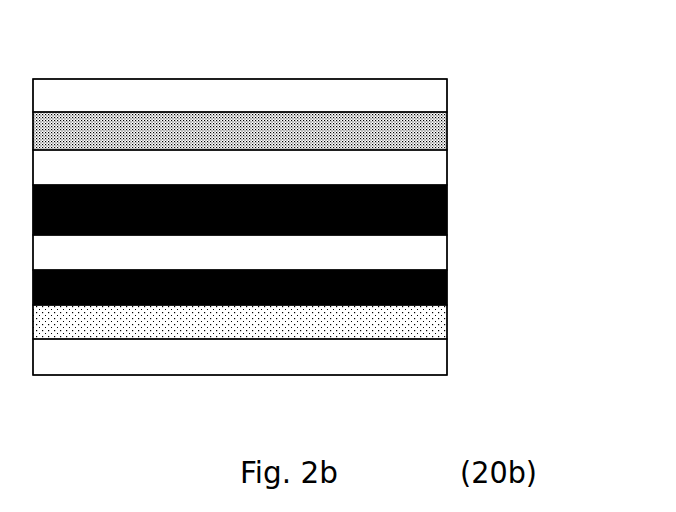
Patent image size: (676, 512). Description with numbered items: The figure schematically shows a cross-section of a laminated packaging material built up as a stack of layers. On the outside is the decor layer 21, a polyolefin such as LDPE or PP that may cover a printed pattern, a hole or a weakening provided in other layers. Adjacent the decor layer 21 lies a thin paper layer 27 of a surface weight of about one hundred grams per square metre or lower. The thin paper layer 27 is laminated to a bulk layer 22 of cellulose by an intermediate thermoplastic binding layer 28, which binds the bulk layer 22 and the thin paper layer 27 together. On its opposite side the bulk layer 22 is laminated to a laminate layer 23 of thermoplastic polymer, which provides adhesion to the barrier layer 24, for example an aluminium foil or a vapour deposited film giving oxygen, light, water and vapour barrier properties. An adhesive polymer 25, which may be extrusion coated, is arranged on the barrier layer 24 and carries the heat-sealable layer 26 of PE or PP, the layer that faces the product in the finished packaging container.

The decor layer 21 is at (305, 95).
The thin paper layer 27 is at (305, 131).
The binding layer 28 is at (305, 167).
The bulk layer 22 is at (305, 210).
The laminate layer 23 is at (305, 252).
The barrier layer 24 is at (305, 287).
The adhesive polymer 25 is at (305, 322).
The heat-sealable layer 26 is at (305, 357).